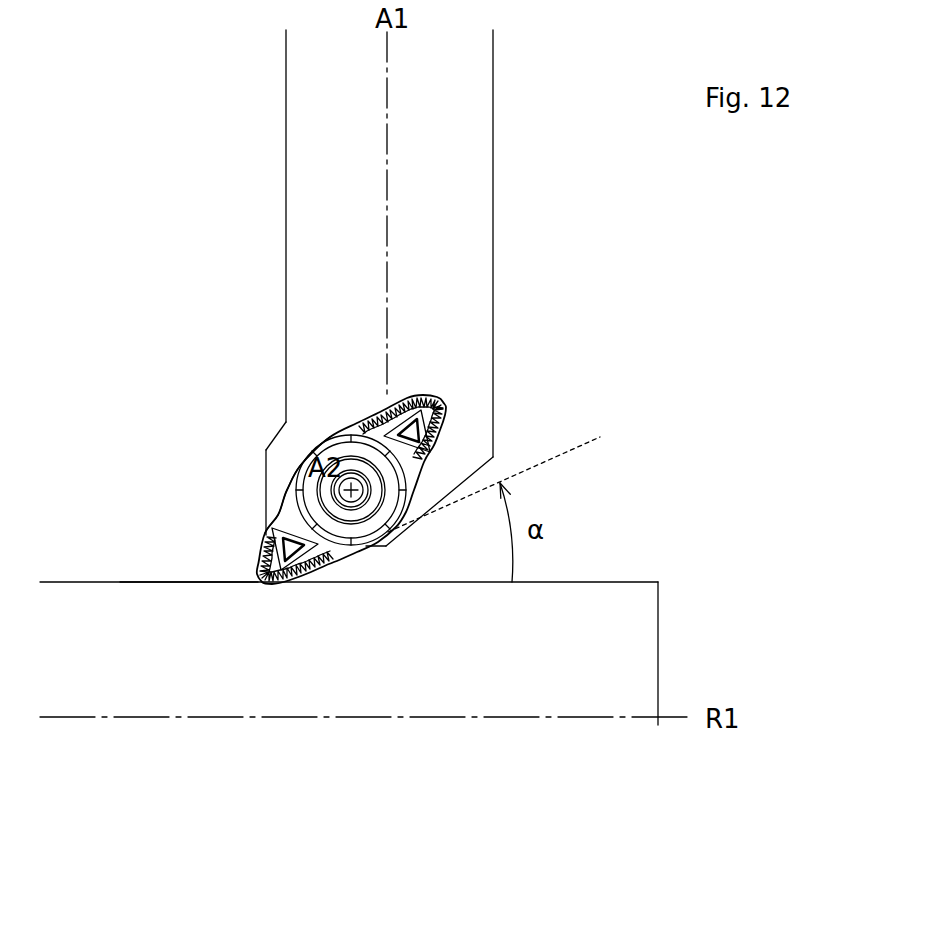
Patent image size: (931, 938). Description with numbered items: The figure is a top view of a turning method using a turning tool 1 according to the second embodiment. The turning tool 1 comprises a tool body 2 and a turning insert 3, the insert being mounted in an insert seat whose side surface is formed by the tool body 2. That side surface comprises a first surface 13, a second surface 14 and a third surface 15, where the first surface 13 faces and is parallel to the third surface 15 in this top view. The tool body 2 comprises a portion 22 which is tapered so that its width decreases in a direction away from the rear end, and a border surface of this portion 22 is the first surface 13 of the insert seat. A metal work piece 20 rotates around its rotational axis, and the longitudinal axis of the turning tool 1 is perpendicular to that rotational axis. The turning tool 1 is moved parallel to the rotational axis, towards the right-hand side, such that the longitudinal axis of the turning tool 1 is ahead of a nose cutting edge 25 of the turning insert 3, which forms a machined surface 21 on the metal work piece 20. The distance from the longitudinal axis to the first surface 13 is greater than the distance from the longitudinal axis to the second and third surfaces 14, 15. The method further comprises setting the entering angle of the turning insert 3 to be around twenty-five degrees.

The turning tool 1 is at (566, 290).
The tool body 2 is at (363, 288).
The turning insert 3 is at (299, 402).
The first surface 13 is at (293, 473).
The second surface 14 is at (373, 433).
The third surface 15 is at (427, 465).
The metal work piece 20 is at (349, 607).
The machined surface 21 is at (108, 580).
The portion 22 is at (277, 490).
The nose cutting edge 25 is at (258, 581).